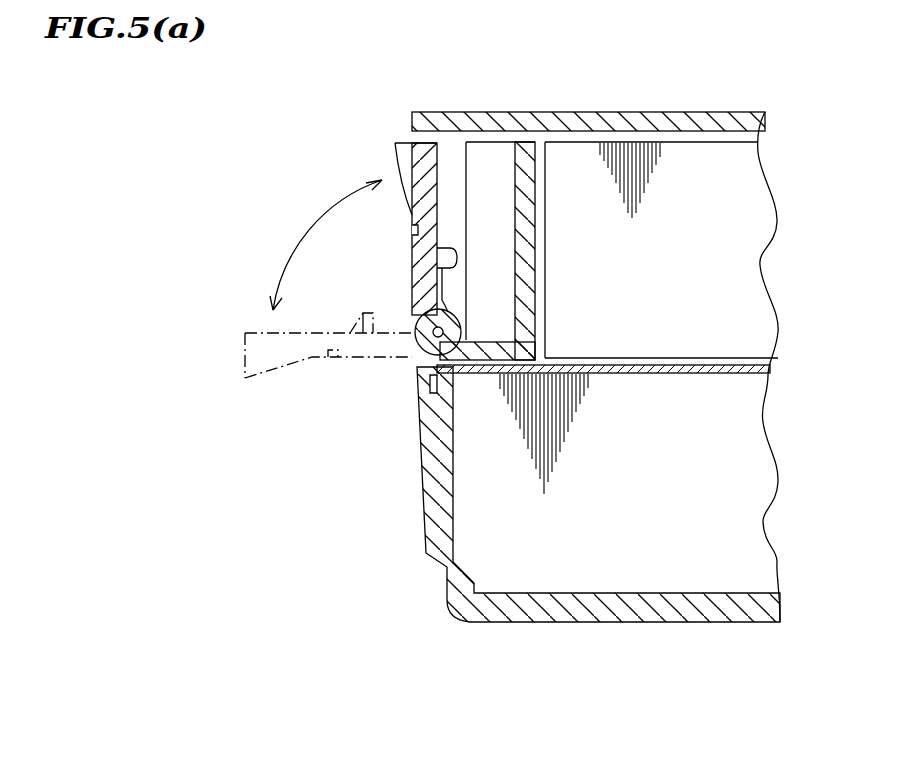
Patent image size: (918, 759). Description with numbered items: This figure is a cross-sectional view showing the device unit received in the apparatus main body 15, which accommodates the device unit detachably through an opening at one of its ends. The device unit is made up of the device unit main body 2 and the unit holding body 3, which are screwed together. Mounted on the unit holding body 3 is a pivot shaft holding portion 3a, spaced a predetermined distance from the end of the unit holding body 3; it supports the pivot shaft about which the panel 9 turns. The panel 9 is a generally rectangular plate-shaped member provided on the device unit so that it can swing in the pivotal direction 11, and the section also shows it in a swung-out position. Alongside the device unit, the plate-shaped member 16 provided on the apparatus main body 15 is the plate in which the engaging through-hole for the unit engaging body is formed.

The device unit main body 2 is at (678, 170).
The unit holding body 3 is at (525, 142).
The pivot shaft holding portion 3a is at (420, 346).
The panel 9 is at (393, 162).
The pivotal direction 11 is at (302, 240).
The apparatus main body 15 is at (442, 567).
The plate-shaped member 16 is at (687, 373).